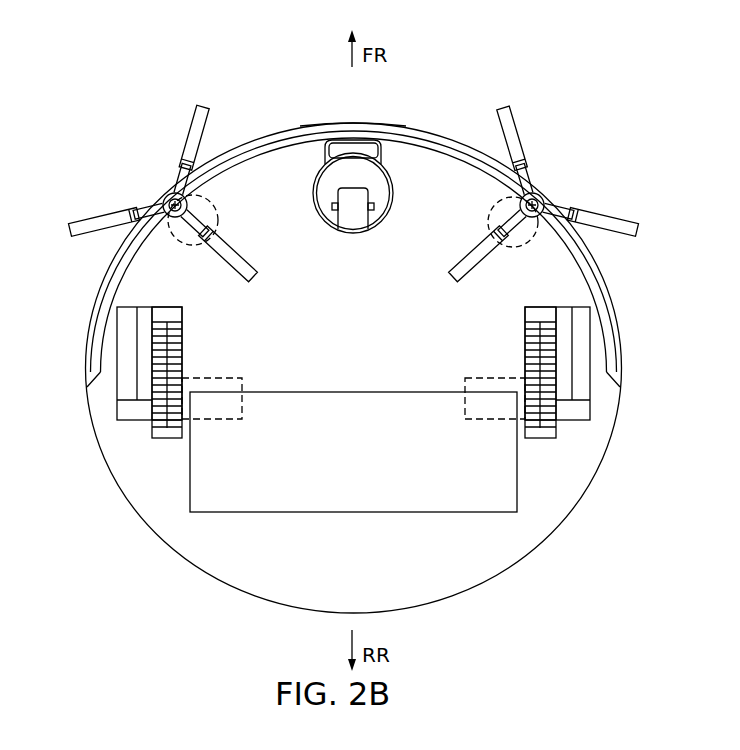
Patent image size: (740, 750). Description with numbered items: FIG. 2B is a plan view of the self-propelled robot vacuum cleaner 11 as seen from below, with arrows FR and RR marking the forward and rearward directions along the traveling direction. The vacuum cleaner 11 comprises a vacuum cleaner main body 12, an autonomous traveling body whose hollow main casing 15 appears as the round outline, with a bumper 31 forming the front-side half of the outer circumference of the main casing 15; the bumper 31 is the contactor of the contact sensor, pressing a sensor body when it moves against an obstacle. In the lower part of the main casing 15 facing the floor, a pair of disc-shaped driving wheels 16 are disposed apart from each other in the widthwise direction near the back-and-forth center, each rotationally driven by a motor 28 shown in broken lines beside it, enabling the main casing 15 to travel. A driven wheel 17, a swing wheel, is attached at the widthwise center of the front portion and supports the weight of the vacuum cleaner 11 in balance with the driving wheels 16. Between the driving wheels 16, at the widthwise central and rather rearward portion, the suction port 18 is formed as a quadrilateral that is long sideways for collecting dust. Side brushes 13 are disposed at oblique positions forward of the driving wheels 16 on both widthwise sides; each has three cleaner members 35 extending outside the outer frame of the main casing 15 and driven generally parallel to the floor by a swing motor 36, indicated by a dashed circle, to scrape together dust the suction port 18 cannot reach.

The vacuum cleaner 11 is at (436, 57).
The vacuum cleaner main body 12 is at (368, 120).
The side brushes 13 is at (185, 101).
The main casing 15 is at (526, 548).
The driving wheels 16 is at (152, 432).
The driven wheel 17 is at (354, 223).
The suction port 18 is at (355, 512).
The motors 28 is at (241, 378).
The bumper 31 is at (412, 130).
The cleaner members 35 is at (189, 133).
The swing motor 36 is at (214, 213).